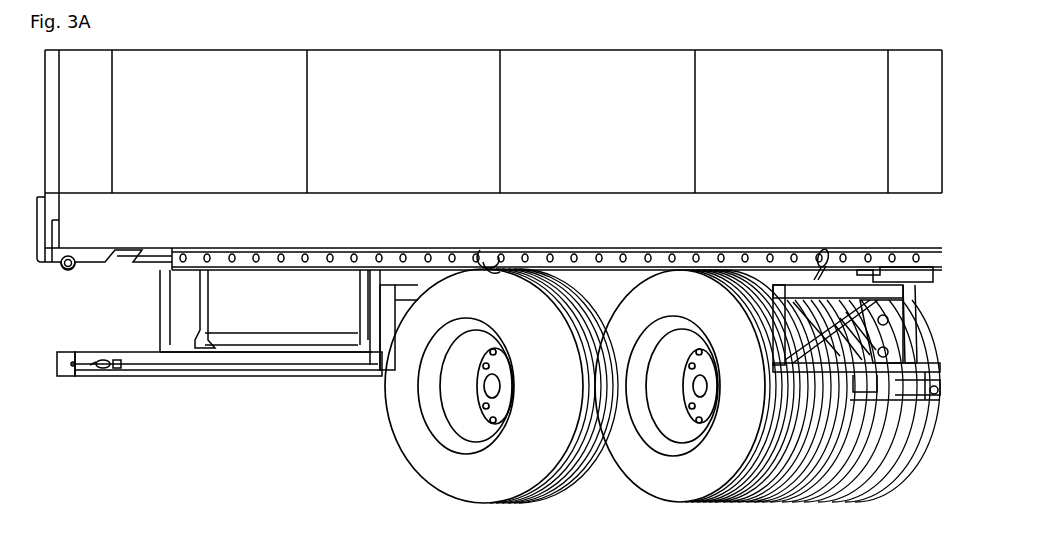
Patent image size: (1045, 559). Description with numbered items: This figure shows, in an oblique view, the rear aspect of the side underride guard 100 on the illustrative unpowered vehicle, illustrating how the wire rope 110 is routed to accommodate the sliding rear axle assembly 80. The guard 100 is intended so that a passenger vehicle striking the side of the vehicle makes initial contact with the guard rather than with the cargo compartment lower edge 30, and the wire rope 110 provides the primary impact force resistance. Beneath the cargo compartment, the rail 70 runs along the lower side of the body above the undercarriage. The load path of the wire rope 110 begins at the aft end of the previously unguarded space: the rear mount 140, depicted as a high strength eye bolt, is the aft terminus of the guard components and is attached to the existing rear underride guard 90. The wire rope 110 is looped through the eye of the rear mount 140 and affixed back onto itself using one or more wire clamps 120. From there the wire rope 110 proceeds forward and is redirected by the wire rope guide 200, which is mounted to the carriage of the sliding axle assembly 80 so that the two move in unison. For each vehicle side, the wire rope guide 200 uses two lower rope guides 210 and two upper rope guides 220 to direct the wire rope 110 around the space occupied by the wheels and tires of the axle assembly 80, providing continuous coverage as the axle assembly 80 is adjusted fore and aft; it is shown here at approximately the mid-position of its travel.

The cargo compartment lower edge 30 is at (142, 253).
The side rail with tie-down holes 70 is at (195, 258).
The sliding rear axle assembly 80 is at (407, 435).
The rear underride guard 90 is at (65, 377).
The side underride guard 100 is at (325, 387).
The wire rope 110 is at (145, 368).
The wire clamp 120 is at (118, 372).
The rear mount 140 is at (89, 368).
The wire rope guide 200 is at (375, 380).
The lower rope guide 210 is at (395, 290).
The upper rope guide 220 is at (490, 252).